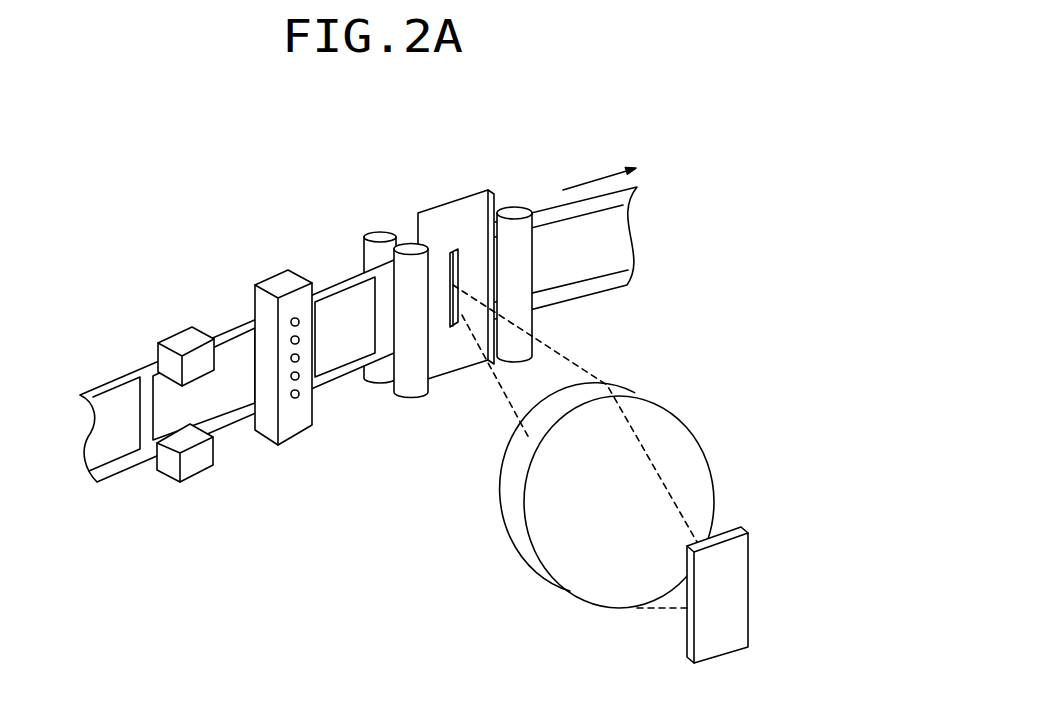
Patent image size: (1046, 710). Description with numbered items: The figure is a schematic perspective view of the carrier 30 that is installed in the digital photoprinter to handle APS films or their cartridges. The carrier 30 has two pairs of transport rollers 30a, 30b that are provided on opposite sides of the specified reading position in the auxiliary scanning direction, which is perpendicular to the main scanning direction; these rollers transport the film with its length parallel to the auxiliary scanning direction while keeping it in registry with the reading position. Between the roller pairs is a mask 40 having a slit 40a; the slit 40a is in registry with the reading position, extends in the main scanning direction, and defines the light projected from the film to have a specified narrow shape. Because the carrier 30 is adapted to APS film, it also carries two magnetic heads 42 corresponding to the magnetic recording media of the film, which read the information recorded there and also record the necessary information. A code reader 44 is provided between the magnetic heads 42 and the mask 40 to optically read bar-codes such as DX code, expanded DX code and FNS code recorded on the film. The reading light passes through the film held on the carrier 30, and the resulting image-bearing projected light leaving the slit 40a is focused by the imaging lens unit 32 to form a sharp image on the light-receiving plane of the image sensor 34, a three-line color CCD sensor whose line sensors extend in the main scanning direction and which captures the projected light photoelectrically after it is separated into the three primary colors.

The carrier 30 is at (387, 194).
The transport rollers 30a is at (403, 400).
The transport rollers 30b is at (515, 290).
The imaging lens unit 32 is at (665, 432).
The image sensor 34 is at (730, 585).
The mask 40 is at (448, 357).
The slit 40a is at (453, 257).
The magnetic heads 42 is at (183, 342).
The code reader 44 is at (275, 282).